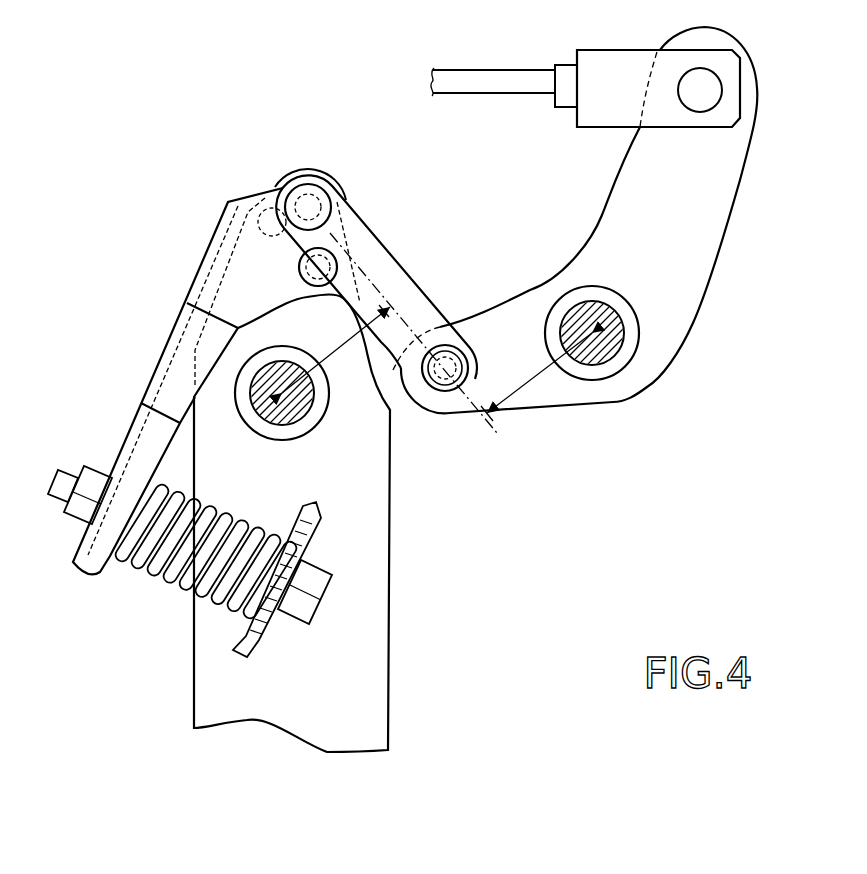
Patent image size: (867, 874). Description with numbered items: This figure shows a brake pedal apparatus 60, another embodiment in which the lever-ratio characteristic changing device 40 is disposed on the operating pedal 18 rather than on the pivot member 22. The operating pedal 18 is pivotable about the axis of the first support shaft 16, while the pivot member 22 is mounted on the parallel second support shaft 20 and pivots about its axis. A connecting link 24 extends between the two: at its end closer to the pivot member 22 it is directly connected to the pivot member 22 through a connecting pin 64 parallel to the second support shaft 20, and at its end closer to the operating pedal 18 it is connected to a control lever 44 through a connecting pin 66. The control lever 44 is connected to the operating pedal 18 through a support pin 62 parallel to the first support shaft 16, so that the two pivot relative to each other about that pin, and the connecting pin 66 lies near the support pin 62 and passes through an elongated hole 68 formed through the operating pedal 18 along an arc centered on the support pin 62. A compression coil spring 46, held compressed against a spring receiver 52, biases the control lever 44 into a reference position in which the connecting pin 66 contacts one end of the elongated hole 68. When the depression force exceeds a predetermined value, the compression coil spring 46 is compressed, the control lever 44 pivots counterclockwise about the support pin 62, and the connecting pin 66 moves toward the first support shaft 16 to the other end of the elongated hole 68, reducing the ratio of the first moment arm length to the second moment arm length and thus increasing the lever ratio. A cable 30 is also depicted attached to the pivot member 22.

The first support shaft 16 is at (300, 417).
The operating pedal 18 is at (372, 703).
The second support shaft 20 is at (600, 350).
The pivot member 22 is at (620, 194).
The connecting link 24 is at (405, 289).
The cable 30 is at (479, 81).
The lever-ratio characteristic changing device 40 is at (153, 241).
The control lever 44 is at (173, 378).
The compression coil spring 46 is at (160, 572).
The spring receiver 52 is at (268, 638).
The brake pedal apparatus 60 is at (522, 534).
The support pin 62 is at (322, 263).
The connecting pin 64 is at (462, 348).
The connecting pin 66 is at (317, 214).
The elongated hole 68 is at (256, 228).